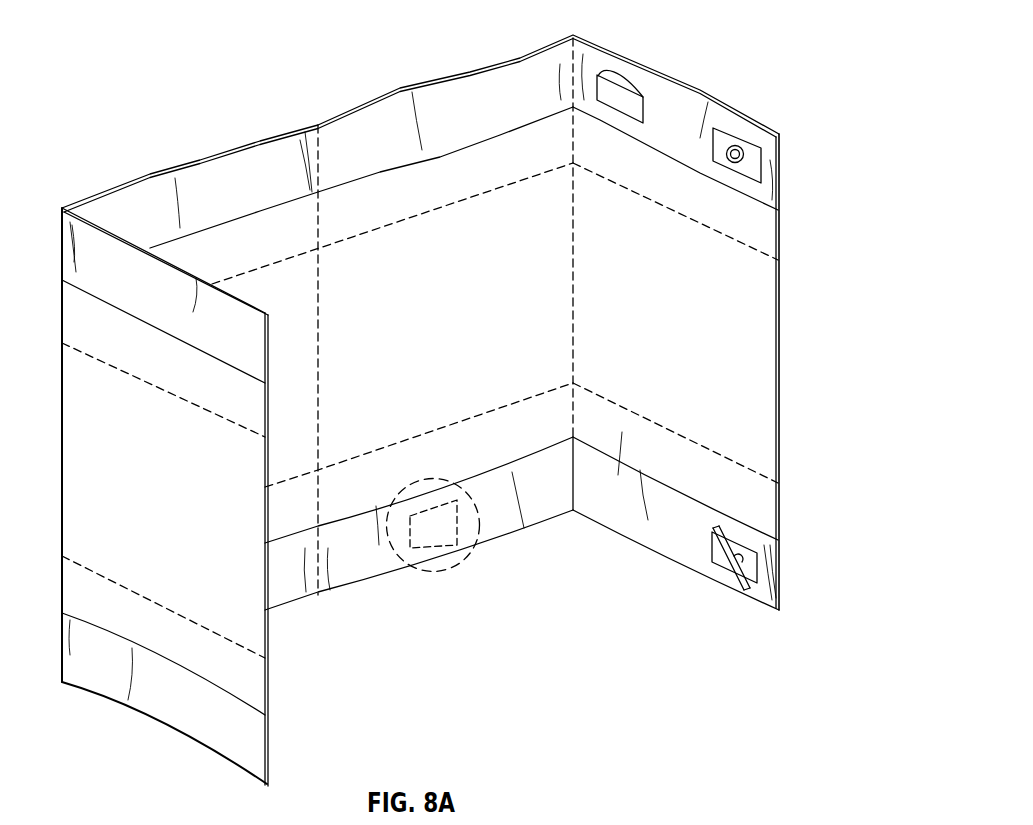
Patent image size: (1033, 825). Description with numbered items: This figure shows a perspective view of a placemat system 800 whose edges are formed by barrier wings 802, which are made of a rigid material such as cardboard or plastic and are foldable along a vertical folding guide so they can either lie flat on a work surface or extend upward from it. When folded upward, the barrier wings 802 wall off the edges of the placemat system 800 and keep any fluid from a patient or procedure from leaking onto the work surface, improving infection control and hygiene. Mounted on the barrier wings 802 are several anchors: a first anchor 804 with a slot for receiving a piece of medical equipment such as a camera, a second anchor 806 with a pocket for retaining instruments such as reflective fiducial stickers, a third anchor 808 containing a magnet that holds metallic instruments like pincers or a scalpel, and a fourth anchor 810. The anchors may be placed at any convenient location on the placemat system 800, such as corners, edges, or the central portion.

The placemat system 800 is at (442, 394).
The barrier wings 802 is at (110, 390).
The first anchor 804 is at (752, 150).
The second anchor 806 is at (625, 93).
The third anchor 808 is at (727, 560).
The fourth anchor 810 is at (436, 527).